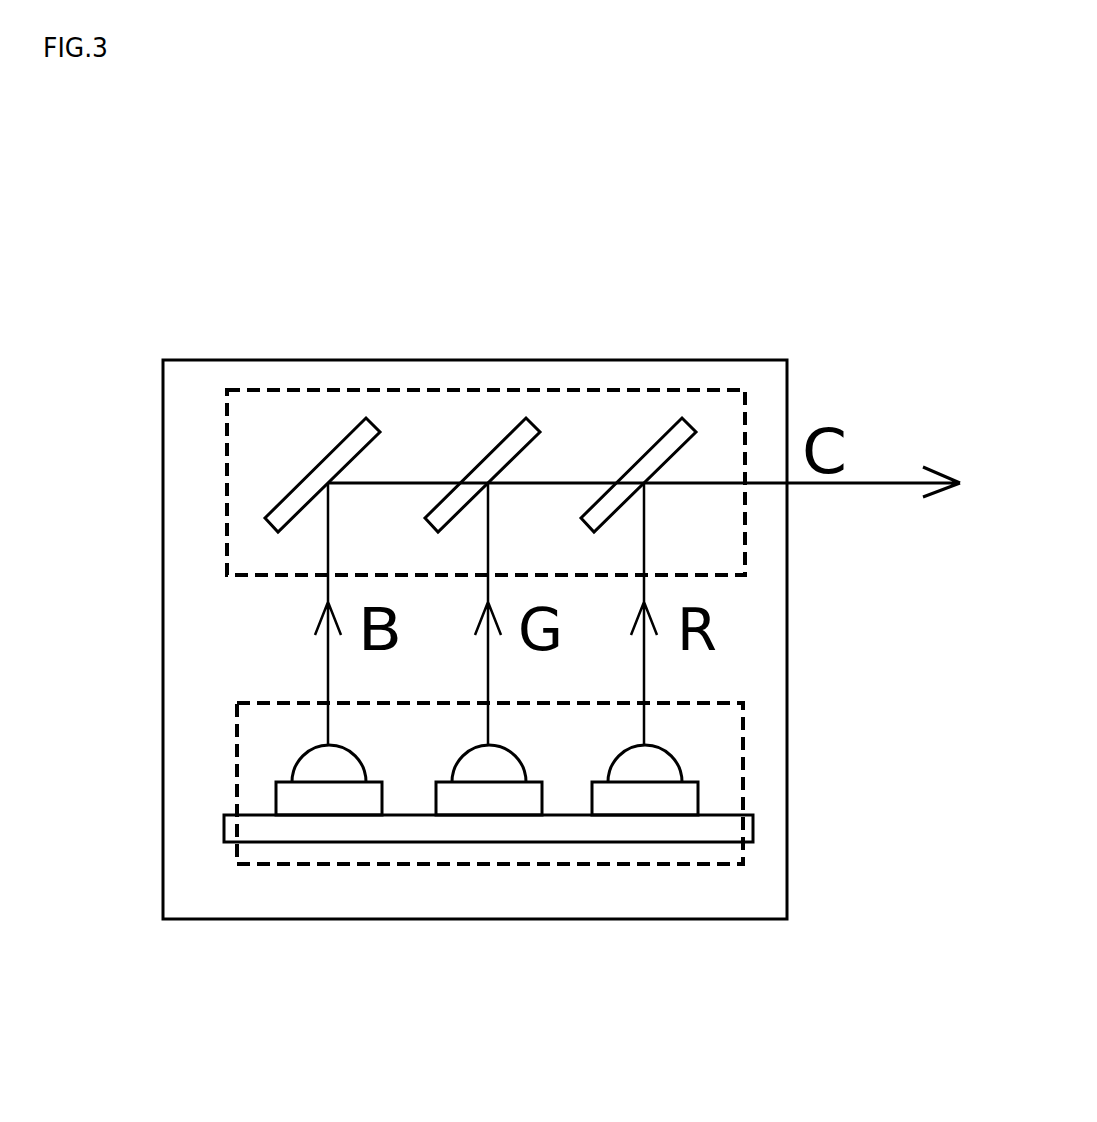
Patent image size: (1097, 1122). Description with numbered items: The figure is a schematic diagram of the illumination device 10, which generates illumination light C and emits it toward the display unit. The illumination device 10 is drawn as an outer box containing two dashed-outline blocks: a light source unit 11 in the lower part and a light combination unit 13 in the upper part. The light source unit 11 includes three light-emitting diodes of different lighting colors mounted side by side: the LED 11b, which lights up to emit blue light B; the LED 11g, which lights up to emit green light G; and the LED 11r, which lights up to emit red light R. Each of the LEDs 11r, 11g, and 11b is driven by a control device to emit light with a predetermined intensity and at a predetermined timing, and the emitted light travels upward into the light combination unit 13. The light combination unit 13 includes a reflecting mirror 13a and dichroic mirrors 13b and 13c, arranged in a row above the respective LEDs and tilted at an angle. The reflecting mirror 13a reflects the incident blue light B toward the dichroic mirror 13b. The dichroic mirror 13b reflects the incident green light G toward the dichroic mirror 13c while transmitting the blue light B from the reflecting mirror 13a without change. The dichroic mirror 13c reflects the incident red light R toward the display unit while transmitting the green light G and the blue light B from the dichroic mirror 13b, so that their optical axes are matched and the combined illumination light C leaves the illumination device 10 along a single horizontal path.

The illumination device 10 is at (865, 255).
The light source unit 11 is at (228, 748).
The LED 11b is at (322, 808).
The LED 11g is at (482, 806).
The LED 11r is at (638, 806).
The light combination unit 13 is at (213, 472).
The reflecting mirror 13a is at (366, 418).
The dichroic mirror 13b is at (526, 418).
The dichroic mirror 13c is at (682, 418).